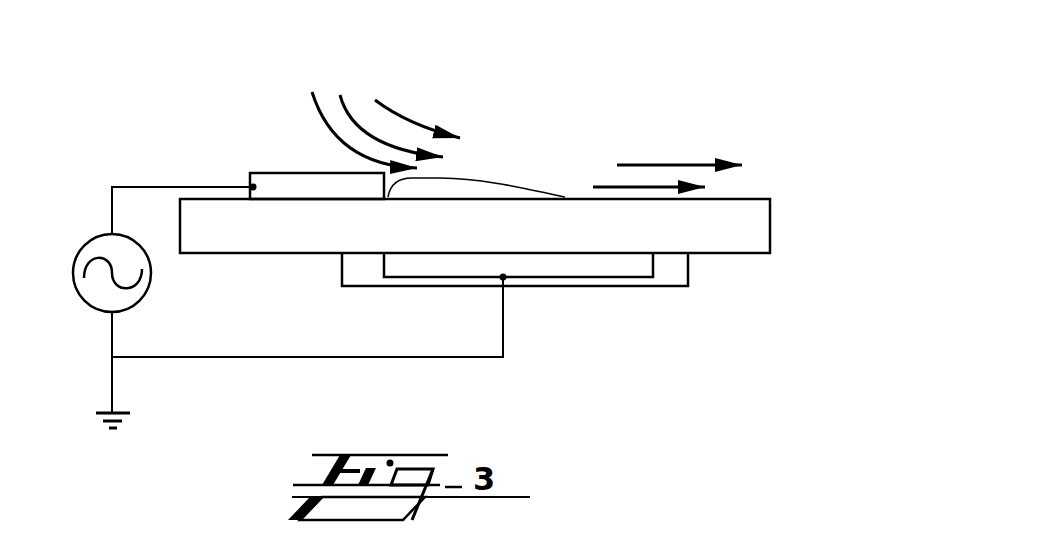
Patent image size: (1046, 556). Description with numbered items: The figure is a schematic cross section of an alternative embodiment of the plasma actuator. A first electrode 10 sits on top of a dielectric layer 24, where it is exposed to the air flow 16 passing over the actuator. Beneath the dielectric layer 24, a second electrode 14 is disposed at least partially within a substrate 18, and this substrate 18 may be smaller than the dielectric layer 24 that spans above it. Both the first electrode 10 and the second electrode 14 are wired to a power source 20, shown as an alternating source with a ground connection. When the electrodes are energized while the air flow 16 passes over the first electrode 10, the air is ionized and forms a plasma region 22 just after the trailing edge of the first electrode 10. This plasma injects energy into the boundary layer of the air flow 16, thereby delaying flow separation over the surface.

The first electrode 10 is at (280, 173).
The second electrode 14 is at (598, 273).
The air flow 16 is at (642, 165).
The substrate 18 is at (672, 272).
The power source 20 is at (82, 247).
The plasma region 22 is at (477, 180).
The dielectric layer 24 is at (232, 253).